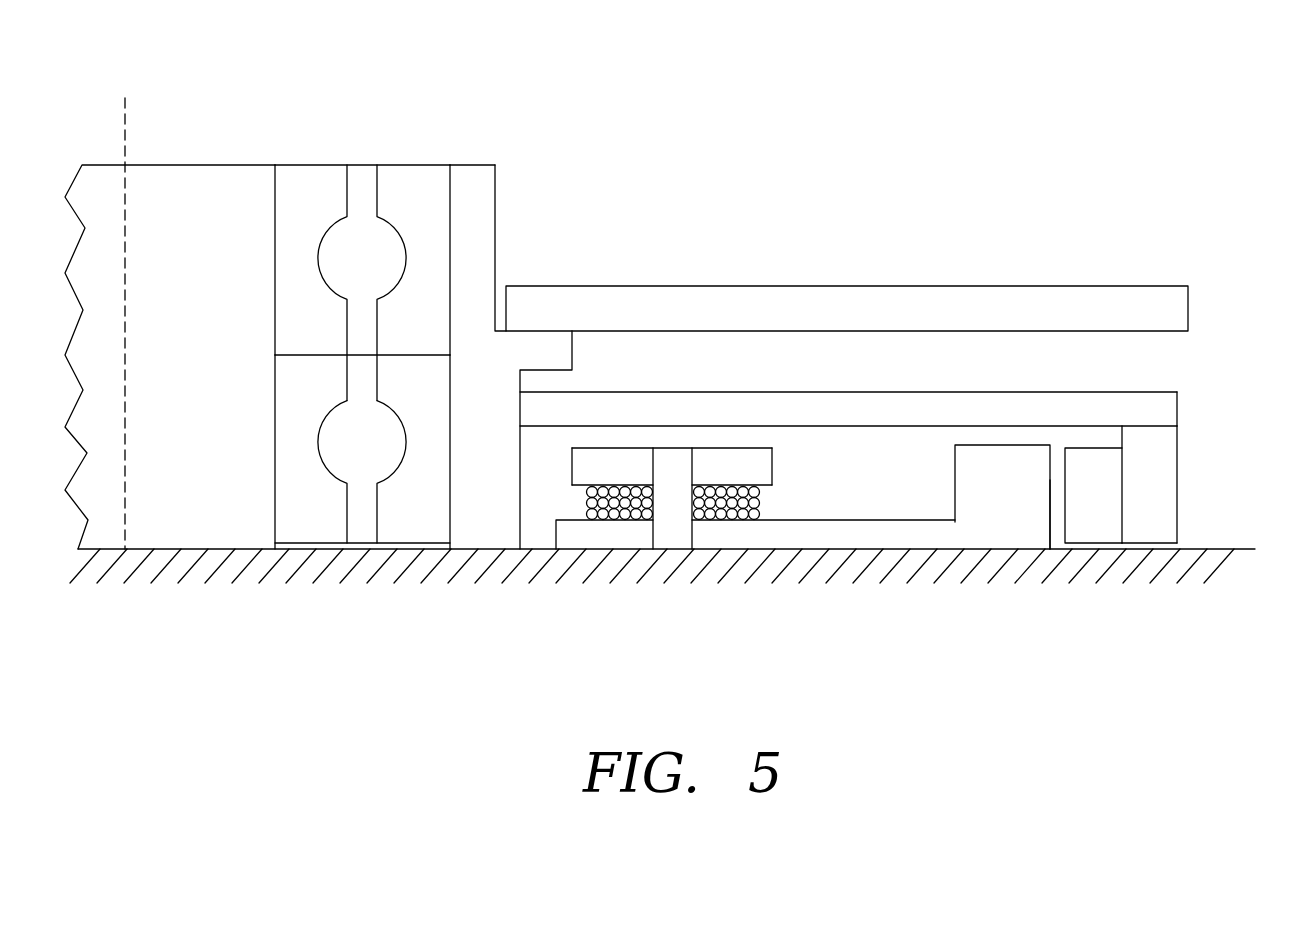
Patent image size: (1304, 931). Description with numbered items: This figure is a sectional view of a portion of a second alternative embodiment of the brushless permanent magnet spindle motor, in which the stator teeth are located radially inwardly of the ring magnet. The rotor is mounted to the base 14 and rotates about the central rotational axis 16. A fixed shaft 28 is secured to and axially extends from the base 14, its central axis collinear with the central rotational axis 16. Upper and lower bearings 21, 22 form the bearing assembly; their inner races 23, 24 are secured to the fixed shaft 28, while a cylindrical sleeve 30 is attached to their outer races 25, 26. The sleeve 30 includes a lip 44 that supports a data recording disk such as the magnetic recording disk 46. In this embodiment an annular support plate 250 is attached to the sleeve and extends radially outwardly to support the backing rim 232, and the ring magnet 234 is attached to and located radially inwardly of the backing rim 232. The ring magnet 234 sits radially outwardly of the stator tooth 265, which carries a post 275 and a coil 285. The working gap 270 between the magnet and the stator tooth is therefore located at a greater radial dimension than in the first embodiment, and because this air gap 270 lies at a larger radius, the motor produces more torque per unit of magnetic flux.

The base 14 is at (1237, 550).
The central rotational axis 16 is at (125, 113).
The upper bearing 21 is at (362, 215).
The lower bearing 22 is at (388, 455).
The inner race 23 is at (312, 185).
The inner race 24 is at (300, 512).
The outer race 25 is at (430, 185).
The outer race 26 is at (434, 522).
The fixed shaft 28 is at (226, 195).
The cylindrical sleeve 30 is at (472, 185).
The lip 44 is at (555, 342).
The magnetic recording disk 46 is at (851, 302).
The backing rim 232 is at (1163, 470).
The ring magnet 234 is at (1105, 532).
The annular support plate 250 is at (1130, 403).
The stator tooth 265 is at (977, 533).
The working gap 270 is at (1058, 533).
The post 275 is at (672, 537).
The coil 285 is at (760, 503).